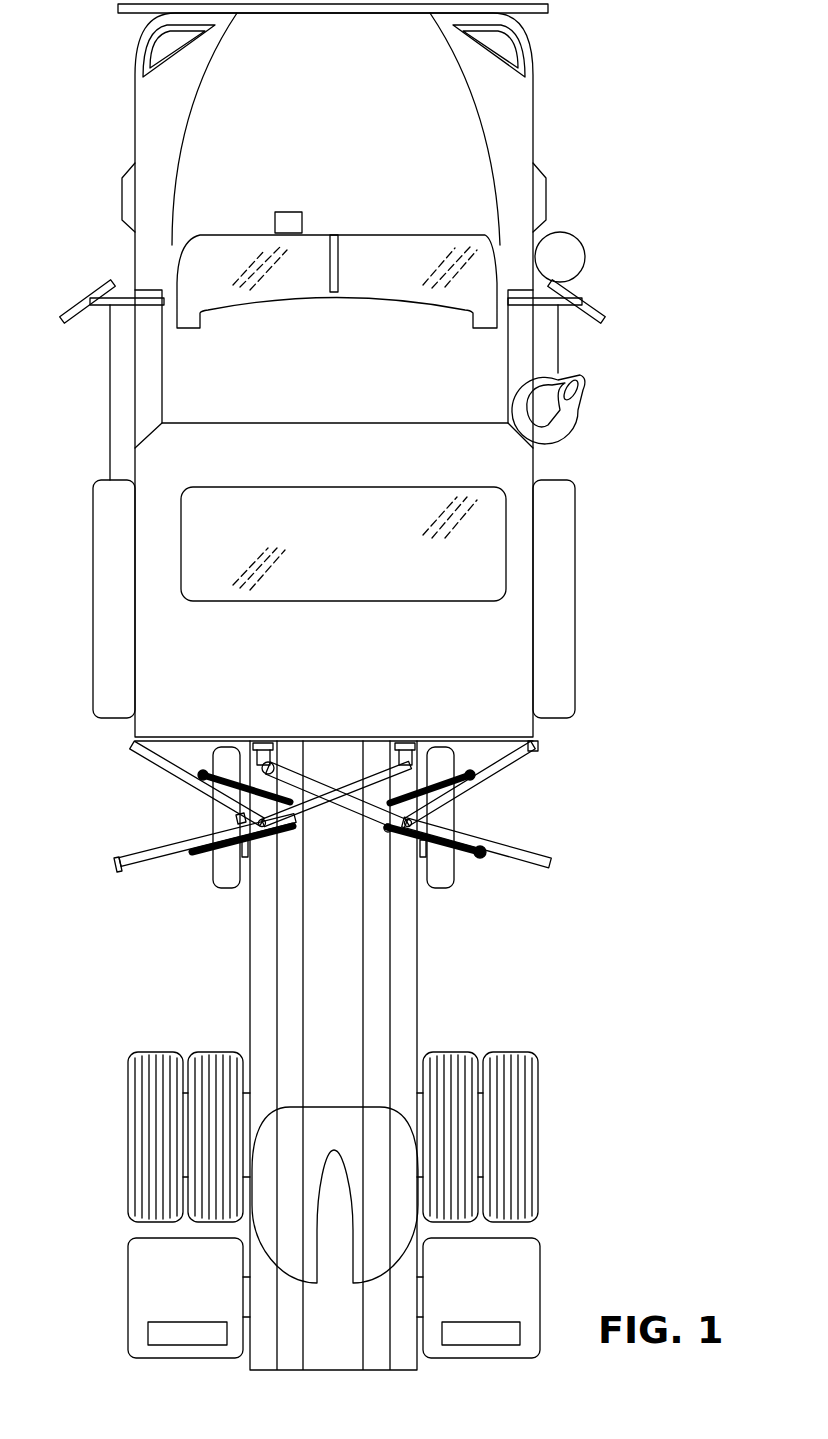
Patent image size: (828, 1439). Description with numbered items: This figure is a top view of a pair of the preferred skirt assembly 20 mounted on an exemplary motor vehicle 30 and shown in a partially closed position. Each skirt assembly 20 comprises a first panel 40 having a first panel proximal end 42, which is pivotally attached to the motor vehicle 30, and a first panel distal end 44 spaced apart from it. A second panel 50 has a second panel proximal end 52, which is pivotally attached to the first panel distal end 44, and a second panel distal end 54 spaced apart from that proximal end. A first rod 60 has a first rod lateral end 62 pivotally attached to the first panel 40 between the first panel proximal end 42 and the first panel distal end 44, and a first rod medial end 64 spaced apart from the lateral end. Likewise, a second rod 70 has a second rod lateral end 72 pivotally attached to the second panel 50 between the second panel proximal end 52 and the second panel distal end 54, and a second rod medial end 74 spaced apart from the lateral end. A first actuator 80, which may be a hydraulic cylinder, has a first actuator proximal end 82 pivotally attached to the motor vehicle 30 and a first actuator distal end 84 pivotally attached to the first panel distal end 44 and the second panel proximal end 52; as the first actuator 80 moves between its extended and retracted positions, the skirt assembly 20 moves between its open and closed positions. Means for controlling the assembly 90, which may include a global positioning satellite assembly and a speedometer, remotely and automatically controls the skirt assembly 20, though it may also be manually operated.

The skirt assembly 20 is at (173, 832).
The motor vehicle 30 is at (545, 578).
The first panel 40 is at (518, 765).
The first panel proximal end 42 is at (533, 748).
The first panel distal end 44 is at (443, 823).
The second panel 50 is at (153, 848).
The second panel proximal end 52 is at (240, 822).
The second panel distal end 54 is at (127, 863).
The first rod 60 is at (215, 772).
The first rod lateral end 62 is at (203, 775).
The first rod medial end 64 is at (248, 795).
The second rod 70 is at (440, 842).
The second rod lateral end 72 is at (473, 852).
The second rod medial end 74 is at (385, 832).
The first actuator 80 is at (340, 812).
The first actuator proximal end 82 is at (275, 768).
The first actuator distal end 84 is at (387, 778).
The means for controlling the assembly 90 is at (275, 218).